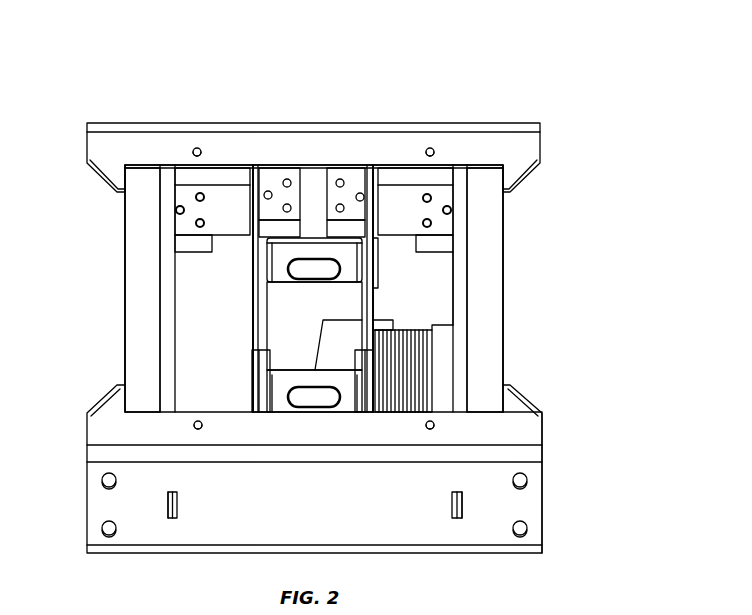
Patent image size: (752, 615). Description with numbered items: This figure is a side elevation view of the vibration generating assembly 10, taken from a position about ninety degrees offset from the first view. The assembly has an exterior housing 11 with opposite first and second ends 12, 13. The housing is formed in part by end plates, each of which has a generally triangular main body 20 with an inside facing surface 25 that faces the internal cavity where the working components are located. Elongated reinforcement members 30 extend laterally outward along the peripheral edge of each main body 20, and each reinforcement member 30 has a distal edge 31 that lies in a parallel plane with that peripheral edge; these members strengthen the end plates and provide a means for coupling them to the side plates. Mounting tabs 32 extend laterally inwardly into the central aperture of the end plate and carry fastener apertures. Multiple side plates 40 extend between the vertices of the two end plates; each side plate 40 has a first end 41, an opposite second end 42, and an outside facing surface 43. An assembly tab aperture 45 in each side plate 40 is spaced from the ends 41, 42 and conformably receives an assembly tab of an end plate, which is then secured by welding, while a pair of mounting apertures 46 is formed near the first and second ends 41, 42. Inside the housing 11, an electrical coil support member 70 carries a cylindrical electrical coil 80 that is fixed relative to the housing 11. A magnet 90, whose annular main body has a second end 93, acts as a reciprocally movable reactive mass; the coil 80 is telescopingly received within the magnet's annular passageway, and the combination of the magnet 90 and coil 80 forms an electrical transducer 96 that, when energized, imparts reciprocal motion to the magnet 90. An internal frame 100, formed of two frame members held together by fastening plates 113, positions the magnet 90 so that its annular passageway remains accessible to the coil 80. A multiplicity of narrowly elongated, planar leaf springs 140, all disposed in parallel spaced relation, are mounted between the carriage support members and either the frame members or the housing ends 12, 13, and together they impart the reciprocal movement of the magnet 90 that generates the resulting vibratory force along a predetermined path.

The vibration generating assembly 10 is at (532, 88).
The exterior housing 11 is at (530, 497).
The first end 12 is at (100, 482).
The second end 13 is at (542, 520).
The main body 20 is at (168, 272).
The inside facing surface 25 is at (450, 313).
The reinforcement member 30 is at (140, 318).
The distal edge 31 is at (125, 337).
The mounting tab 32 is at (180, 508).
The side plate 40 is at (236, 123).
The first end 41 is at (87, 130).
The second end 42 is at (542, 140).
The outside facing surface 43 is at (267, 515).
The assembly tab aperture 45 is at (166, 505).
The mounting aperture 46 is at (100, 528).
The electrical coil support member 70 is at (442, 360).
The electrical coil 80 is at (402, 383).
The magnet 90 is at (288, 317).
The second end 93 is at (278, 340).
The electrical transducer 96 is at (345, 315).
The internal frame 100 is at (372, 270).
The fastening plate 113 is at (307, 262).
The leaf spring 140 is at (250, 295).